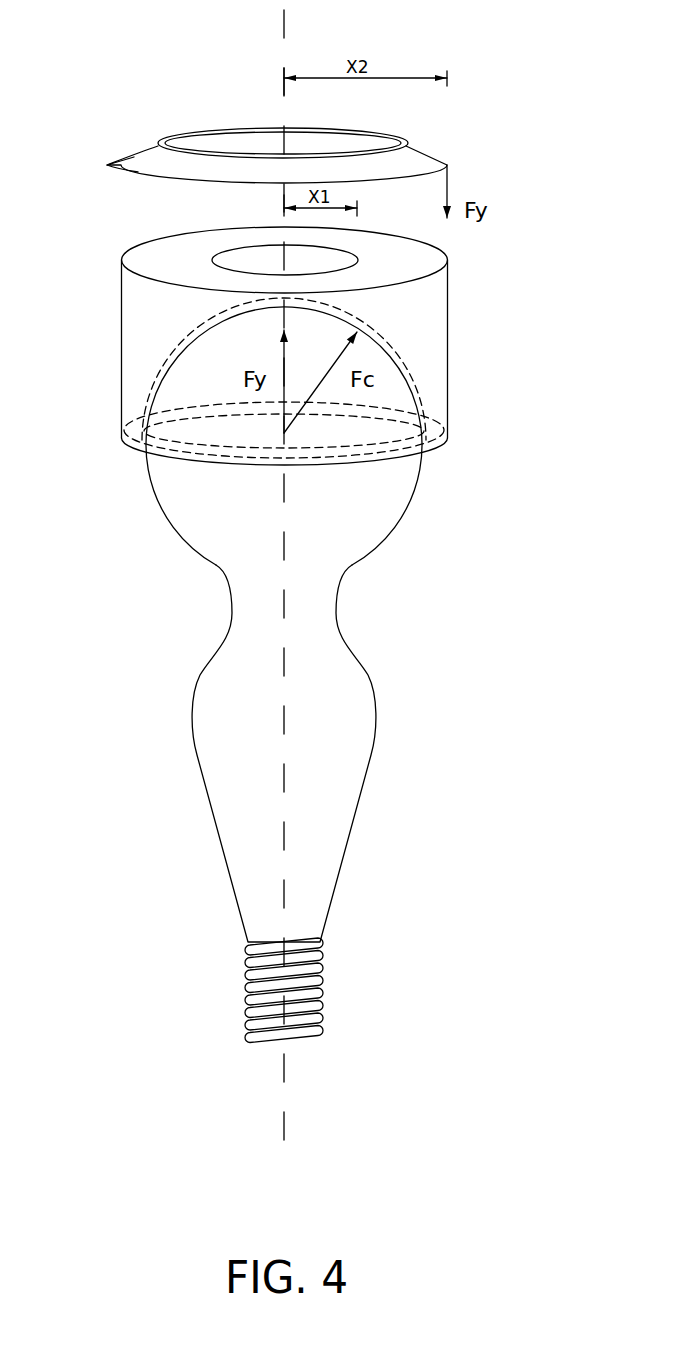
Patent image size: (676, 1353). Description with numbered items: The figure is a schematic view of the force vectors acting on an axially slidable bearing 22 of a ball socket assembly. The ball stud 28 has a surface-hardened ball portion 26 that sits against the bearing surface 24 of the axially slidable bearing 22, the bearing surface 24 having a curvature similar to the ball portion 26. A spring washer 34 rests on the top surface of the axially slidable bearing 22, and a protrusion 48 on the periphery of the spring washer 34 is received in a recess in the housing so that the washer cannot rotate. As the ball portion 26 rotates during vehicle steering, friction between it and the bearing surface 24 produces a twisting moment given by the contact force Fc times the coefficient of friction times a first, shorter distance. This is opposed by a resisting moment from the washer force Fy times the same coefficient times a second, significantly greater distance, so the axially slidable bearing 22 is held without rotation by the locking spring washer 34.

The axially slidable bearing 22 is at (448, 343).
The bearing surface 24 is at (172, 368).
The ball portion 26 is at (157, 500).
The ball stud 28 is at (377, 747).
The spring washer 34 is at (427, 150).
The protrusion 48 is at (118, 172).